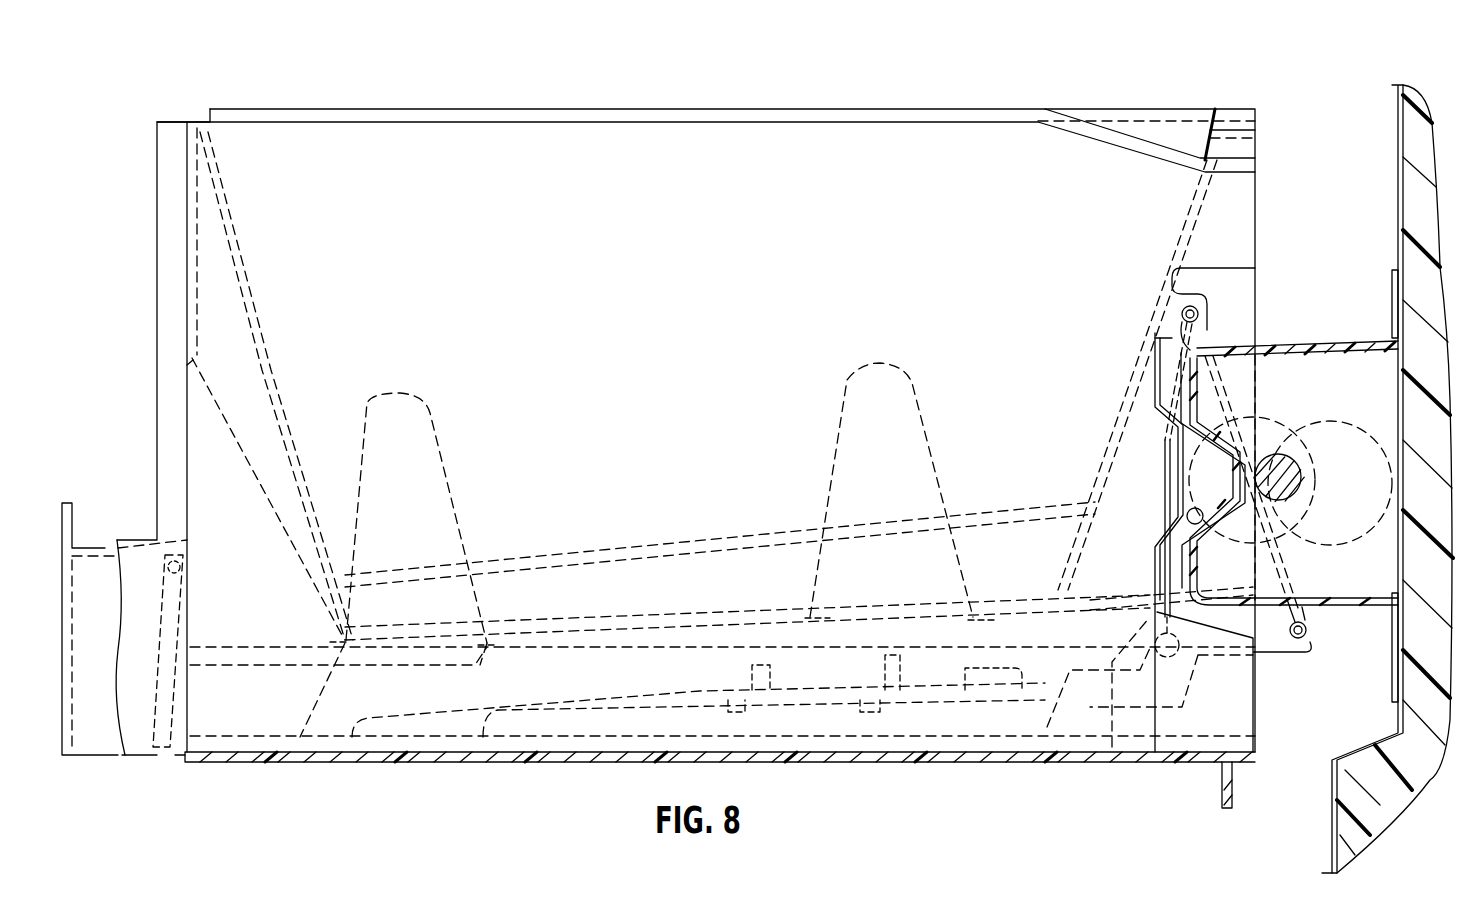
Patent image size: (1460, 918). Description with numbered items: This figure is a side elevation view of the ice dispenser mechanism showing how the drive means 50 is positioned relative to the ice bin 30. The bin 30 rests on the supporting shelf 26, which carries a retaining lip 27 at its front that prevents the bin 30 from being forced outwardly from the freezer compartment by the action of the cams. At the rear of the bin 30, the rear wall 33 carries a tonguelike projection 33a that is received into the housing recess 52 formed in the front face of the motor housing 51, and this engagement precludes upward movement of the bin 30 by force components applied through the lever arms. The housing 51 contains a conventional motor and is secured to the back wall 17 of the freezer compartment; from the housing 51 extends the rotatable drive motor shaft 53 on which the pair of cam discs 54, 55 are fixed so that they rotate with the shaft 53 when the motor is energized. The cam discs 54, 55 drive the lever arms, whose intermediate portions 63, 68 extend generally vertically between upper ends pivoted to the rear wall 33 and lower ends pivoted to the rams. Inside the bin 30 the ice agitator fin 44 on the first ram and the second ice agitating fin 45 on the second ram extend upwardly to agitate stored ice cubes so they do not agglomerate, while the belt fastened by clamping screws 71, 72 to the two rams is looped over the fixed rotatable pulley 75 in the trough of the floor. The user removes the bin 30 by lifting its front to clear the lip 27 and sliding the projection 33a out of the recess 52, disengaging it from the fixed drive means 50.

The bin 30 is at (447, 92).
The supporting shelf 26 is at (878, 763).
The retaining lip 27 is at (178, 758).
The rear wall 33 is at (1200, 212).
The tonguelike projection 33a is at (1215, 470).
The back wall 17 is at (1398, 223).
The drive means 50 is at (1288, 320).
The housing 51 is at (1318, 345).
The housing recess 52 is at (1202, 530).
The drive motor shaft 53 is at (1292, 490).
The cam disc 54 is at (1270, 418).
The cam disc 55 is at (1335, 415).
The intermediate portion 63 is at (1158, 508).
The intermediate portion 68 is at (1295, 571).
The ice agitator fin 44 is at (925, 385).
The second ice agitating fin 45 is at (455, 428).
The clamping screw 71 is at (770, 680).
The clamping screw 72 is at (905, 664).
The pulley 75 is at (1020, 664).